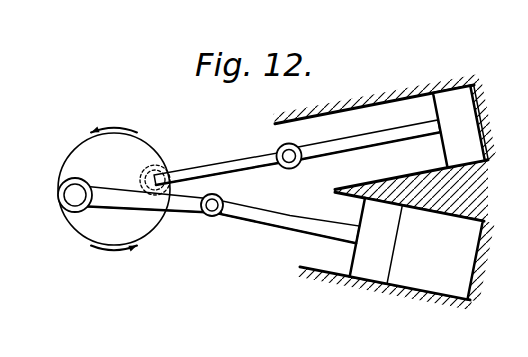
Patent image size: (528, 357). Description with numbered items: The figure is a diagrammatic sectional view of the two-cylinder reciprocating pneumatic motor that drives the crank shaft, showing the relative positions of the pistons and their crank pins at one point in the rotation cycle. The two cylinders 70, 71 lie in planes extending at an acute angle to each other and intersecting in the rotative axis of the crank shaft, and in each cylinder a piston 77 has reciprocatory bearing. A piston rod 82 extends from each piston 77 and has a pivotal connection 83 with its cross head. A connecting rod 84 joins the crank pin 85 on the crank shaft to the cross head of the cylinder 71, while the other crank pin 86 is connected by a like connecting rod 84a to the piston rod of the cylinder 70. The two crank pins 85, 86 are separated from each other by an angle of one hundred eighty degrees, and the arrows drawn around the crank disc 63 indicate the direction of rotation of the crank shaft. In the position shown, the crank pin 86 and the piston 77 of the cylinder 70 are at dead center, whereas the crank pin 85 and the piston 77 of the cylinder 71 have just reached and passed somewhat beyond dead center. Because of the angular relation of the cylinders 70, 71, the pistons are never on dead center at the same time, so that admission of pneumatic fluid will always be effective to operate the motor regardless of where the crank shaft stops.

The rotating disc 63 is at (67, 153).
The cylinder 70 is at (378, 93).
The cylinder 71 is at (428, 291).
The piston 77 is at (450, 151).
The piston rod 82 is at (337, 152).
The pivotal connection 83 is at (281, 164).
The connecting rod 84 is at (183, 211).
The connecting rod 84a is at (207, 167).
The crank pin 85 is at (58, 193).
The crank pin 86 is at (154, 166).